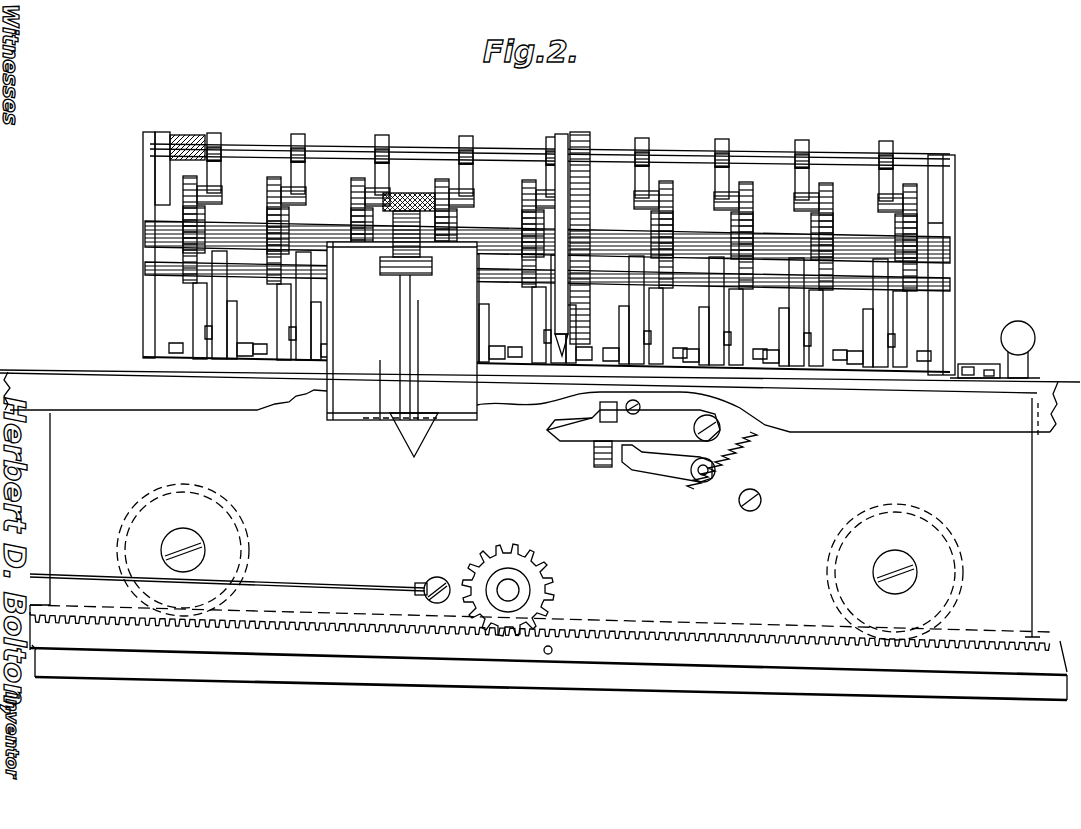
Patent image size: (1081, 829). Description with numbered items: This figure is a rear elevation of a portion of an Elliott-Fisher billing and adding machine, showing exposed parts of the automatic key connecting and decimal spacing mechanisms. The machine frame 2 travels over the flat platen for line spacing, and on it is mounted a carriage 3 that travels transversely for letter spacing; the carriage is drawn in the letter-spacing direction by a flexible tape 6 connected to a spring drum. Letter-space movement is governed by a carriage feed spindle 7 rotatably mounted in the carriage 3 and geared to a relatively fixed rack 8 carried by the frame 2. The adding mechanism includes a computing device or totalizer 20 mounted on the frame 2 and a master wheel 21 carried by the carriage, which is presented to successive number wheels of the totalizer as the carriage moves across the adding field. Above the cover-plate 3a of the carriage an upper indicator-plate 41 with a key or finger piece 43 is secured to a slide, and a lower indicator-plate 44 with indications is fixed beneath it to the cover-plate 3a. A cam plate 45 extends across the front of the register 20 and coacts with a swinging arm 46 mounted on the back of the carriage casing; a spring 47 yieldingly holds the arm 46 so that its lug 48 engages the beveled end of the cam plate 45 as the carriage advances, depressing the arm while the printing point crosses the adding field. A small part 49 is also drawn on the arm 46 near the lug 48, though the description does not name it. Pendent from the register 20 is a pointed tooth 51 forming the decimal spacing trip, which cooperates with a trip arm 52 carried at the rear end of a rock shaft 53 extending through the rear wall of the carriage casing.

The machine frame 2 is at (549, 681).
The carriage 3 is at (540, 505).
The cover-plate of the carriage 3a is at (914, 380).
The flexible tape 6 is at (308, 585).
The carriage feed spindle 7 is at (508, 590).
The rack 8 is at (610, 645).
The computing device or totalizer 20 is at (402, 306).
The master wheel 21 is at (578, 138).
The upper indicator-plate 41 is at (975, 363).
The key or finger piece 43 is at (1022, 334).
The lower indicator-plate 44 is at (1030, 377).
The cam plate 45 is at (460, 405).
The swinging arm 46 is at (633, 427).
The spring 47 is at (757, 484).
The lug 48 is at (560, 440).
The pin 49 is at (600, 408).
The pointed tooth 51 is at (408, 420).
The trip arm 52 is at (627, 458).
The rock shaft 53 is at (700, 472).